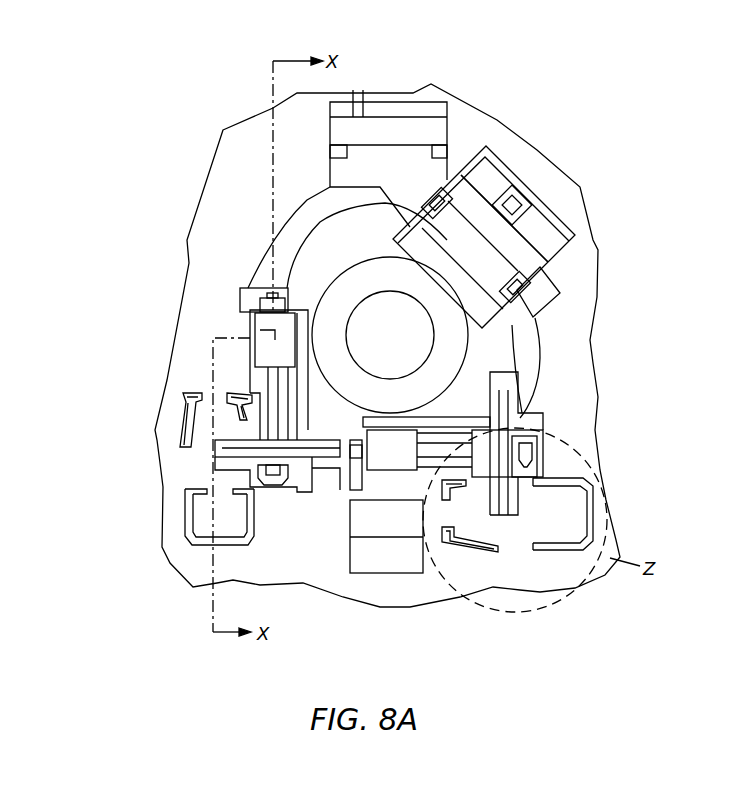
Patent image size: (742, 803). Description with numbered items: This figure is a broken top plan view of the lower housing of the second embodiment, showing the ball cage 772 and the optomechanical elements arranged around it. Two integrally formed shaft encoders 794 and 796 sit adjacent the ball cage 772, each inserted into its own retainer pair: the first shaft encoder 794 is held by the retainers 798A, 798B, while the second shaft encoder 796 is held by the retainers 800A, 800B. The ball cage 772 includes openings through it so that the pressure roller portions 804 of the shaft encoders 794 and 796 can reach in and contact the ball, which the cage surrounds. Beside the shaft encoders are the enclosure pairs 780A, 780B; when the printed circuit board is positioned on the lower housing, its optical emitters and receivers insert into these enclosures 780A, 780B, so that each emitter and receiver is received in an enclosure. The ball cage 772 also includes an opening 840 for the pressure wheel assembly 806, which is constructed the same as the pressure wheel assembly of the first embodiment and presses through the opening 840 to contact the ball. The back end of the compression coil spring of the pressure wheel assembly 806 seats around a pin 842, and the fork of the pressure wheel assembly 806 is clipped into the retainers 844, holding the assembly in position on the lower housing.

The ball cage 772 is at (507, 338).
The enclosure pair 780A is at (183, 492).
The enclosure pair 780B is at (550, 548).
The shaft encoder 794 is at (272, 475).
The shaft encoder 796 is at (507, 390).
The retainer pair 798A is at (262, 300).
The retainer pair 798B is at (252, 470).
The retainer pair 800A is at (363, 458).
The retainer pair 800B is at (518, 447).
The pressure roller portion 804 is at (262, 328).
The pressure wheel assembly 806 is at (477, 176).
The opening 840 is at (487, 180).
The pin 842 is at (517, 200).
The retainers 844 is at (528, 288).